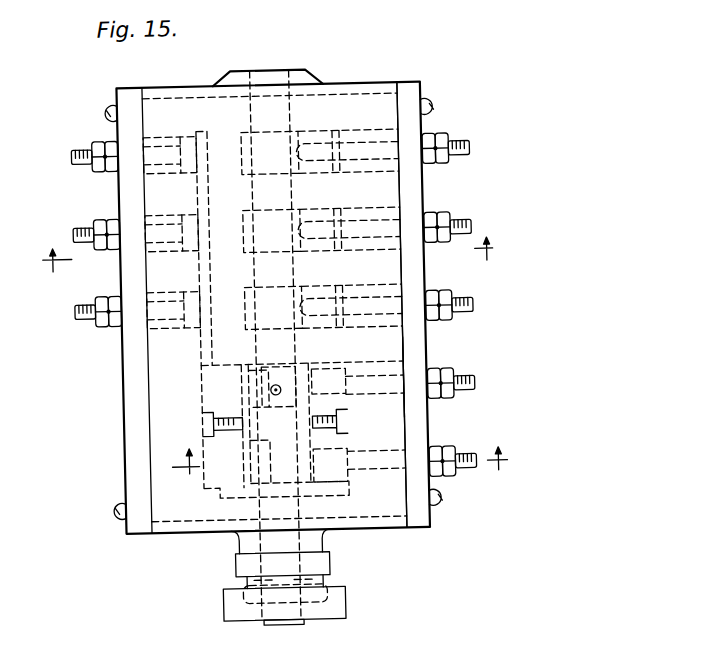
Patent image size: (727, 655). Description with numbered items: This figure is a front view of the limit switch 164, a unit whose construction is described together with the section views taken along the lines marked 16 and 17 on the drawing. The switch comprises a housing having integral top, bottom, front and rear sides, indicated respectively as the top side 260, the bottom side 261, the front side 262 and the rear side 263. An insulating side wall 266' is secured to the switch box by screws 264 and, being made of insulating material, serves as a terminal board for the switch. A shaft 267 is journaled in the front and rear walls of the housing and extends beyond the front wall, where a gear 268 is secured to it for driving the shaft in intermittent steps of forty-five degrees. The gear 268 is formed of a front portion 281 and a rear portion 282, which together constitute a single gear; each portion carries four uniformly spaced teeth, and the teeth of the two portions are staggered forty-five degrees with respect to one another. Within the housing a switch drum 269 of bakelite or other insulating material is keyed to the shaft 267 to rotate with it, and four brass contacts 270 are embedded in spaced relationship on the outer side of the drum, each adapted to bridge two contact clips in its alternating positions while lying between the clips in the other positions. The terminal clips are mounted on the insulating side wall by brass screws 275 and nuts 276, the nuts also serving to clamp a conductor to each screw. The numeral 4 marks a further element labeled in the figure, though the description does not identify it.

The valve plug 4 is at (369, 375).
The section line 16- 16 is at (272, 256).
The section line 17- 17 is at (349, 467).
The limit switch 164 is at (416, 65).
The top side 260 is at (189, 510).
The bottom side 261 is at (96, 647).
The front side 262 is at (380, 535).
The rear side 263 is at (369, 68).
The screws 264 is at (111, 109).
The side wall 266' is at (455, 376).
The shaft 267 is at (266, 70).
The gear 268 is at (347, 610).
The switch drum 269 is at (219, 326).
The brass contacts 270 is at (200, 204).
The brass screws 275 is at (470, 225).
The nuts 276 is at (447, 324).
The front portion 281 is at (326, 611).
The rear portion 282 is at (315, 565).